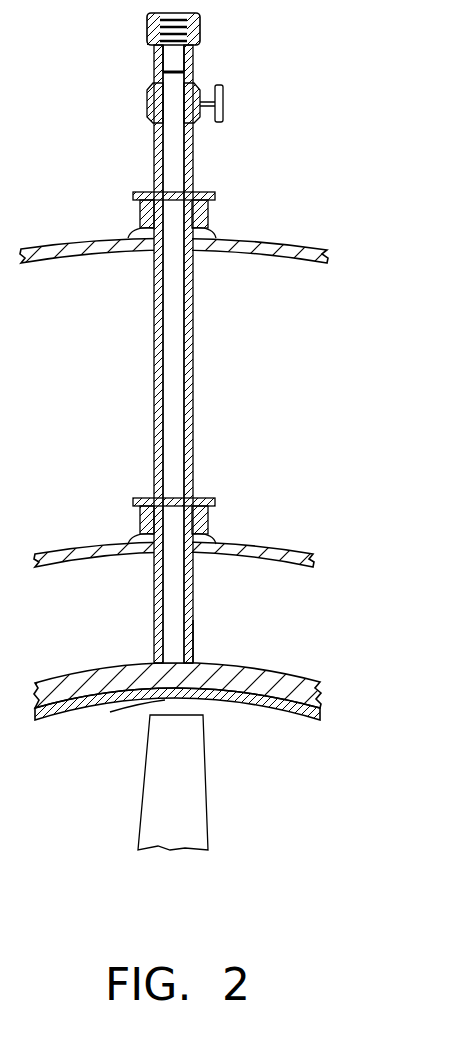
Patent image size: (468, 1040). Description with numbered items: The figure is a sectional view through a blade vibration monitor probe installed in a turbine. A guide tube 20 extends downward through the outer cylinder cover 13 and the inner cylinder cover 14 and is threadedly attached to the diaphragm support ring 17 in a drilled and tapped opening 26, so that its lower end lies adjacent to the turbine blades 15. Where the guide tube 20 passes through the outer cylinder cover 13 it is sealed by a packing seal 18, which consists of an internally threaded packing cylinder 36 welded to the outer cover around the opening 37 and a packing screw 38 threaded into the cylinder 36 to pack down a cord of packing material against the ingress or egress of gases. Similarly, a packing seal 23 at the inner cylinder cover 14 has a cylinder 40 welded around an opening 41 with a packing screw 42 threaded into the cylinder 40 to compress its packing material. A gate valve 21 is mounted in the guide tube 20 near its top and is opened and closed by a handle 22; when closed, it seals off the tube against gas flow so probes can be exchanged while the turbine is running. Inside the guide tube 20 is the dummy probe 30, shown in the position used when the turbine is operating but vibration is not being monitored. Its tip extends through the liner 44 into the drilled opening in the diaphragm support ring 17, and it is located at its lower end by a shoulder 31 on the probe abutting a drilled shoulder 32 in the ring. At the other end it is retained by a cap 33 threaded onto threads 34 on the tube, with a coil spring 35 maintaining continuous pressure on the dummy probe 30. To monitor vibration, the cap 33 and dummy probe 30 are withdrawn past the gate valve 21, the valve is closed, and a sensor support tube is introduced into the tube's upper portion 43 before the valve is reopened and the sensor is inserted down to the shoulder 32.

The outer cylinder cover 13 is at (308, 252).
The inner cylinder cover 14 is at (290, 541).
The turbine blades 15 is at (190, 789).
The diaphragm support ring 17 is at (285, 686).
The packing seal 18 is at (218, 216).
The guide tube 20 is at (196, 150).
The gate valve 21 is at (147, 108).
The handle 22 is at (223, 115).
The packing seal 23 is at (218, 524).
The drilled and tapped opening 26 is at (225, 646).
The dummy probe 30 is at (172, 323).
The shoulder 31 is at (155, 663).
The drilled shoulder 32 is at (150, 706).
The cap 33 is at (200, 15).
The threads 34 is at (200, 40).
The coil spring 35 is at (178, 60).
The packing cylinder 36 is at (140, 228).
The opening 37 is at (194, 252).
The packing screw 38 is at (140, 194).
The cylinder 40 is at (140, 530).
The opening 41 is at (194, 556).
The packing screw 42 is at (212, 498).
The upper portion 43 is at (188, 72).
The liner 44 is at (240, 697).